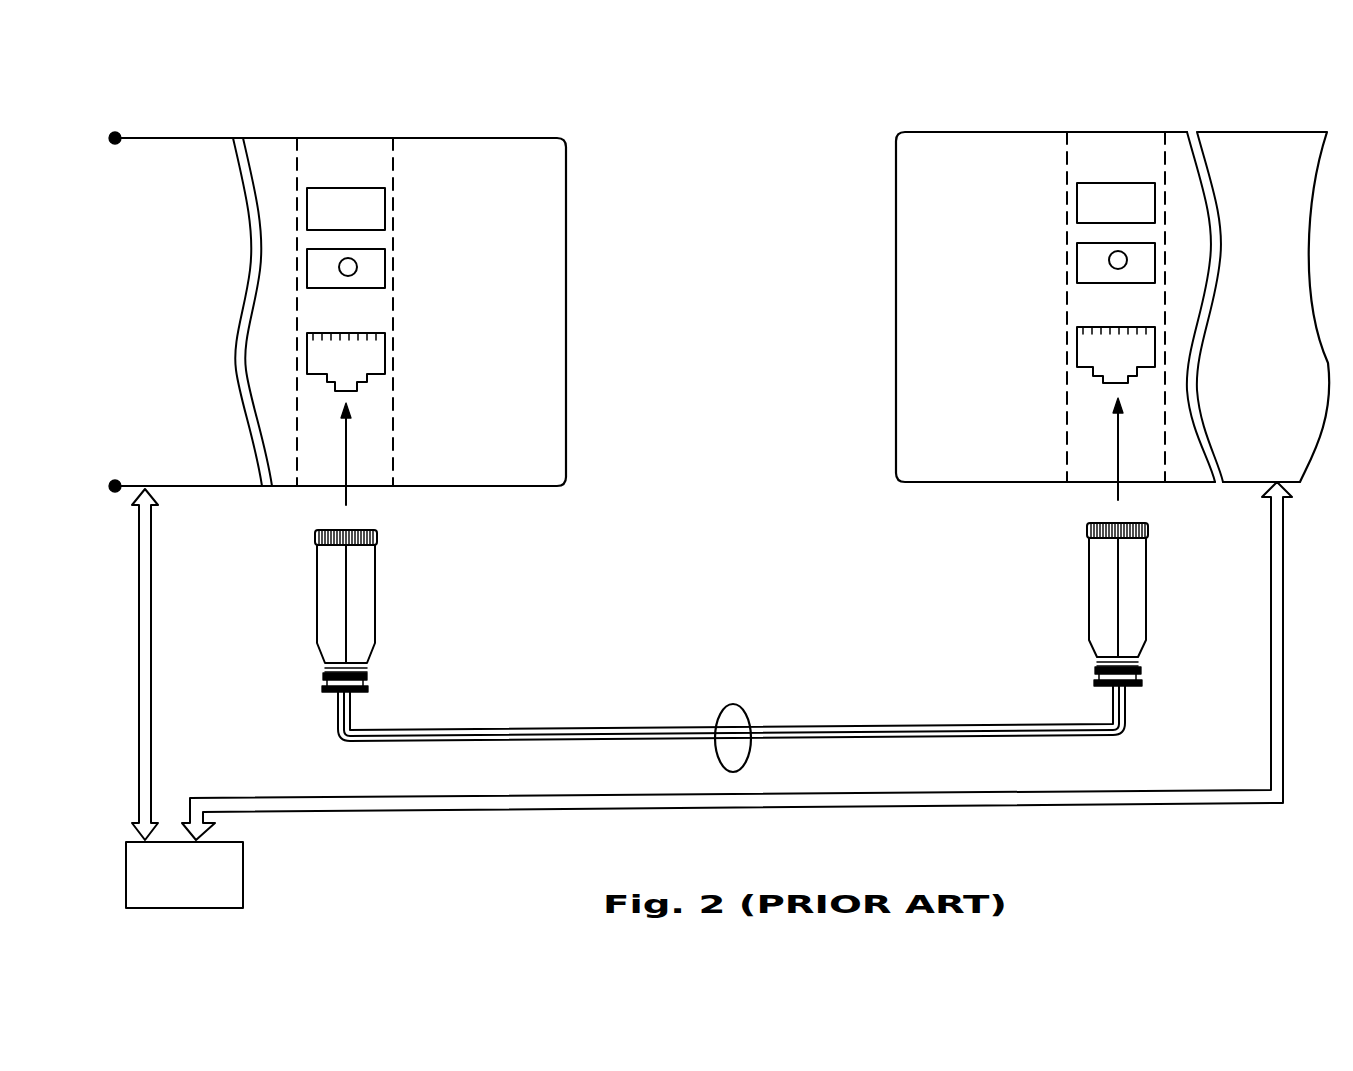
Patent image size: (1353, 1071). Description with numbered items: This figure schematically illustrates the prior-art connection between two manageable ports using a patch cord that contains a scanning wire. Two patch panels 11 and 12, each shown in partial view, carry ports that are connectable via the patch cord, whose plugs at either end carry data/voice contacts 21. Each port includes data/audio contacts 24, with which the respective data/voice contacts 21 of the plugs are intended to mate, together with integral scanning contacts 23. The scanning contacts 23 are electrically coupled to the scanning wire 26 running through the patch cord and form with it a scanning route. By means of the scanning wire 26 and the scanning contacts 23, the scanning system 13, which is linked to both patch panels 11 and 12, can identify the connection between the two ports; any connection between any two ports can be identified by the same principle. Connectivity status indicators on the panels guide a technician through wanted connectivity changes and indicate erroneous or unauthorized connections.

The patch panel 11 is at (434, 286).
The patch panel 12 is at (1022, 281).
The scanning system 13 is at (243, 868).
The data/voice contacts 21 is at (740, 594).
The scanning contacts 23 is at (783, 352).
The data/audio contacts 24 is at (320, 338).
The scanning wire 26 is at (345, 598).